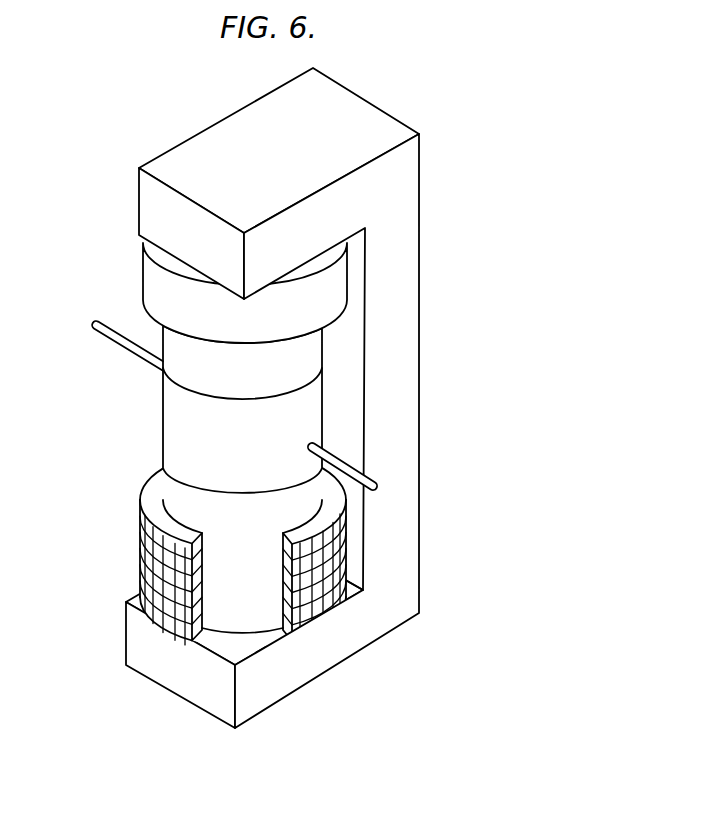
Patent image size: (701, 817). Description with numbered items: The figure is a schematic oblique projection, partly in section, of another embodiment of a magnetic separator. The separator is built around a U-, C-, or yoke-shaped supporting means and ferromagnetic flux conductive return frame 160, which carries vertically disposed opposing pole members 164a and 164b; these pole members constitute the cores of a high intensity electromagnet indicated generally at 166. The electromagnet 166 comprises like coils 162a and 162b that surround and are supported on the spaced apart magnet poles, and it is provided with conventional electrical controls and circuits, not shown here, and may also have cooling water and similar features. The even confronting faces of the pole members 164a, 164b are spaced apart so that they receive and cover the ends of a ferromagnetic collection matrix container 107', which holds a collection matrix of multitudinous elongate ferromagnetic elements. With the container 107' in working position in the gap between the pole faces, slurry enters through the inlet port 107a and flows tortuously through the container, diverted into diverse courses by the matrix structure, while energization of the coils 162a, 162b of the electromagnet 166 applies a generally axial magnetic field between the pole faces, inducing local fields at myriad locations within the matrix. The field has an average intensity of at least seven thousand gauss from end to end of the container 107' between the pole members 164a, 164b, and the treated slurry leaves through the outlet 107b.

The ferromagnetic flux conductive return frame 160 is at (256, 398).
The coil 162a is at (147, 273).
The coil 162b is at (140, 569).
The pole member 164a is at (317, 358).
The pole member 164b is at (264, 585).
The high intensity electromagnet 166 is at (199, 548).
The ferromagnetic collection matrix container 107' is at (258, 409).
The inlet port 107a is at (371, 491).
The outlet 107b is at (105, 336).